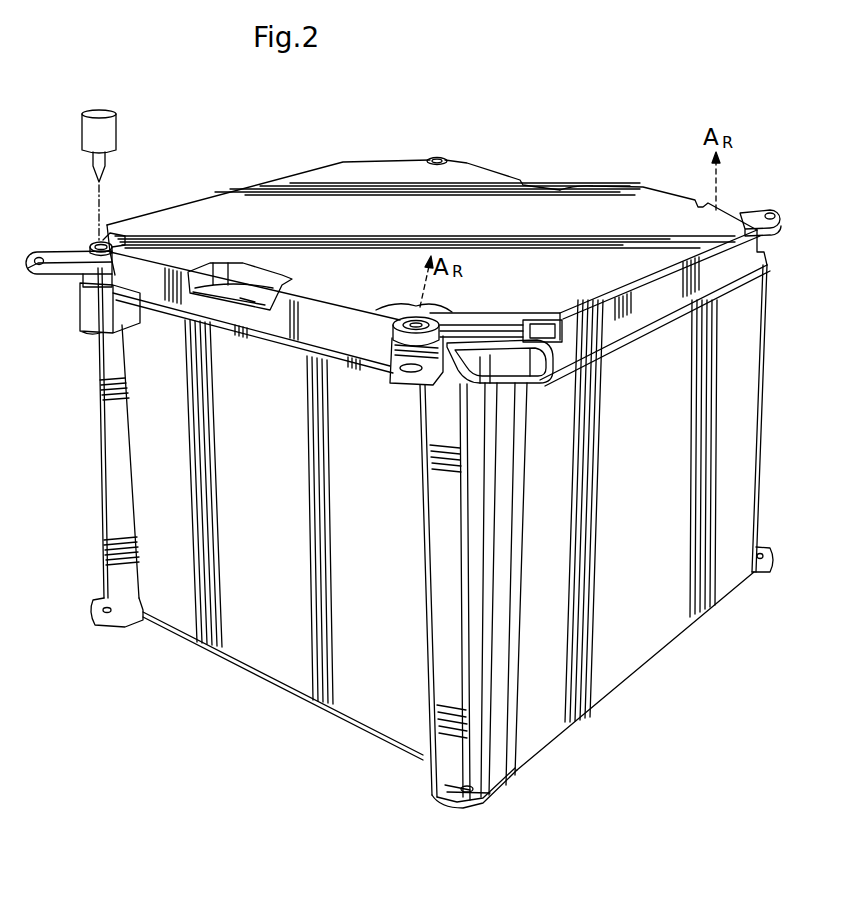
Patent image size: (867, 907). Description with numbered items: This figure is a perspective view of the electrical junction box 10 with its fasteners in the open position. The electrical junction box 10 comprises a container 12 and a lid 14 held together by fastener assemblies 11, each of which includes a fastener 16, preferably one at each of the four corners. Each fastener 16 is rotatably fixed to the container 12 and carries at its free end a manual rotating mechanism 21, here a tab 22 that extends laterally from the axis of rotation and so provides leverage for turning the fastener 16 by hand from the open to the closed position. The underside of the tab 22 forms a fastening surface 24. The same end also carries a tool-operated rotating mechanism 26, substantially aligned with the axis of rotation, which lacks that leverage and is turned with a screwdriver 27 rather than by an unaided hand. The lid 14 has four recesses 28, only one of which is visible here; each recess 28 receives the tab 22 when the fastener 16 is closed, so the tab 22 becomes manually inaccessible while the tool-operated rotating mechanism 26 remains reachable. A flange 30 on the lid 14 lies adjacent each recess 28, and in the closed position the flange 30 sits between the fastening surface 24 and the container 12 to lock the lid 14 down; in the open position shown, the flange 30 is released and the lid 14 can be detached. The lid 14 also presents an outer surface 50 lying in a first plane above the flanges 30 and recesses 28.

The electrical junction box 10 is at (87, 210).
The fastener assembly 11 is at (405, 305).
The container 12 is at (732, 490).
The lid 14 is at (198, 208).
The fastener 16 is at (70, 257).
The manual rotating mechanism 21 is at (30, 268).
The tab 22 is at (42, 253).
The fastening surface 24 is at (60, 280).
The tool-operated rotating mechanism 26 is at (463, 313).
The screwdriver 27 is at (107, 125).
The recess 28 is at (538, 323).
The flange 30 is at (513, 373).
The outer surface 50 is at (598, 223).